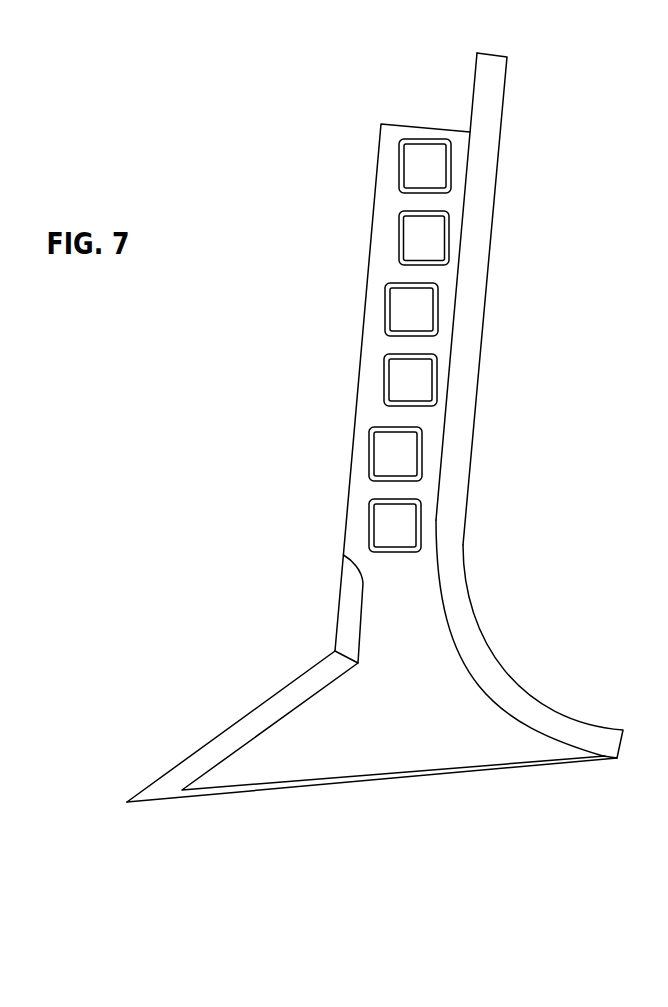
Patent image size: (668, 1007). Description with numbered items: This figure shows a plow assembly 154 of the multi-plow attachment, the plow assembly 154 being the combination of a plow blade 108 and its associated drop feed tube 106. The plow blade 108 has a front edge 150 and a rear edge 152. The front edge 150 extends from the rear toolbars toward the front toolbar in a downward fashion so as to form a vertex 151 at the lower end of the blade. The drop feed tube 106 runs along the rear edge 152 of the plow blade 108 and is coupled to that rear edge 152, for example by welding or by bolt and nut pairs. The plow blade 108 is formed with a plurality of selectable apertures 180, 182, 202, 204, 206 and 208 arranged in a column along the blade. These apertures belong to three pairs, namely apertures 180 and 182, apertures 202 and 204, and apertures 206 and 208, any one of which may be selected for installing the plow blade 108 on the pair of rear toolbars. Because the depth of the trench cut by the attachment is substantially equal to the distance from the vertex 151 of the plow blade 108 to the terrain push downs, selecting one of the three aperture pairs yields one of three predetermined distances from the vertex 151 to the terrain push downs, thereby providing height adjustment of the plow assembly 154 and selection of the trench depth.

The plow assembly 154 is at (265, 166).
The drop feed tube 106 is at (483, 189).
The rear edge 152 is at (482, 692).
The selectable aperture 208 is at (399, 170).
The selectable aperture 206 is at (399, 243).
The selectable aperture 204 is at (385, 308).
The selectable aperture 202 is at (384, 392).
The selectable aperture 182 is at (369, 448).
The selectable aperture 180 is at (369, 528).
The plow blade 108 is at (325, 714).
The front edge 150 is at (255, 708).
The vertex 151 is at (127, 802).